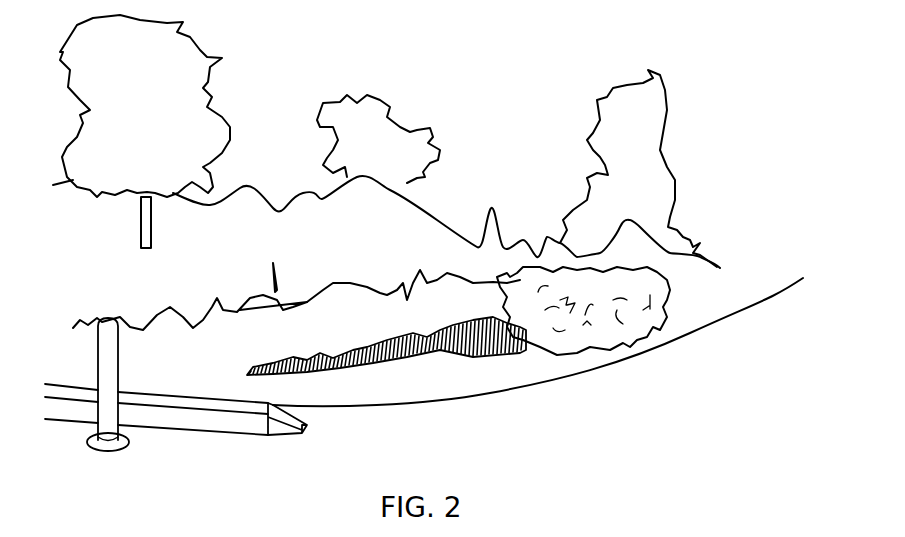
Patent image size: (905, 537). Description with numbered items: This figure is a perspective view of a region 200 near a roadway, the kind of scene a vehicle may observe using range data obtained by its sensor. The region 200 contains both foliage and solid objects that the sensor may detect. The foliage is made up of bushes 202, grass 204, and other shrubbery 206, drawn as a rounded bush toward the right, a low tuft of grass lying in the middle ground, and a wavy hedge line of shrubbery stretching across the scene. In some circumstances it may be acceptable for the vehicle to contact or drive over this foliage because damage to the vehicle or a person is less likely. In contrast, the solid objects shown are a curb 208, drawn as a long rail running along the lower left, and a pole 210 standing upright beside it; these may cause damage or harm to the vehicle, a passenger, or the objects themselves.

The region near a roadway 200 is at (531, 50).
The bushes 202 is at (670, 313).
The grass 204 is at (405, 358).
The shrubbery 206 is at (387, 290).
The curb 208 is at (256, 425).
The pole 210 is at (98, 365).